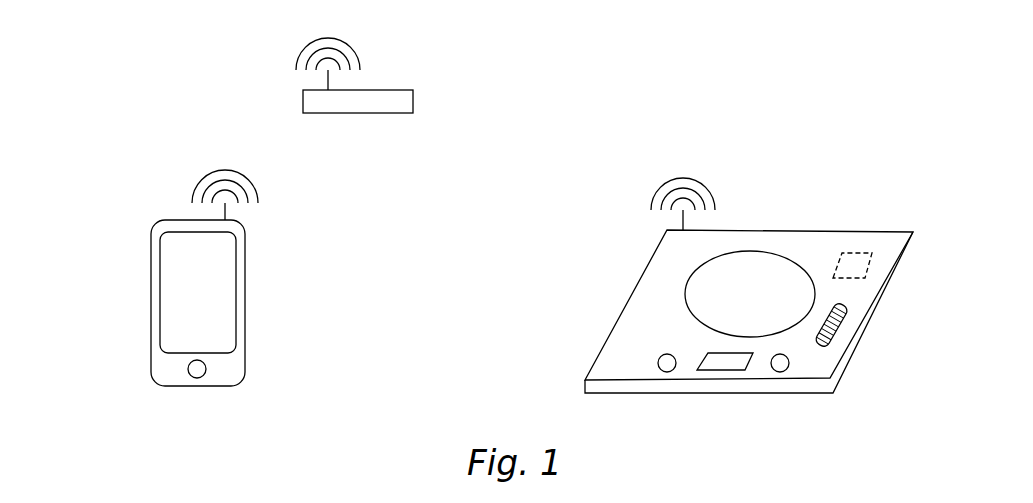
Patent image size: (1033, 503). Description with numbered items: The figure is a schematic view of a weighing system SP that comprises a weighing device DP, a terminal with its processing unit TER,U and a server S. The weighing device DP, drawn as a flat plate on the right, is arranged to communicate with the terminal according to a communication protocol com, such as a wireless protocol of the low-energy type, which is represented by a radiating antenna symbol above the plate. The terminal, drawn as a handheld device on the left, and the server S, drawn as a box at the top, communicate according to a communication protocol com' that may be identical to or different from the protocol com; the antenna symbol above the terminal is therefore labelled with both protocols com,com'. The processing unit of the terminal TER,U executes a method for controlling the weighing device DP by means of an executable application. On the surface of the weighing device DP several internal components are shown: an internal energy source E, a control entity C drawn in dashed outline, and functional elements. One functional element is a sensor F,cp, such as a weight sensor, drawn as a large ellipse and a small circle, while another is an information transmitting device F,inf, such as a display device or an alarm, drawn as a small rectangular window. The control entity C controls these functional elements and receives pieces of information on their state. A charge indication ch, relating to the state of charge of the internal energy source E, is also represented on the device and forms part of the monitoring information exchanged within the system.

The terminal with processing unit TER,U is at (151, 258).
The communication protocols com,com' is at (169, 171).
The server S is at (396, 90).
The communication protocol com' is at (354, 45).
The weighing system SP is at (580, 122).
The weighing device DP is at (848, 232).
The communication protocol com is at (692, 176).
The functional element sensor F,cp is at (688, 280).
The functional element information transmitting device F,inf is at (718, 371).
The control entity C is at (870, 266).
The charge indication ch is at (850, 311).
The internal energy source E is at (818, 348).